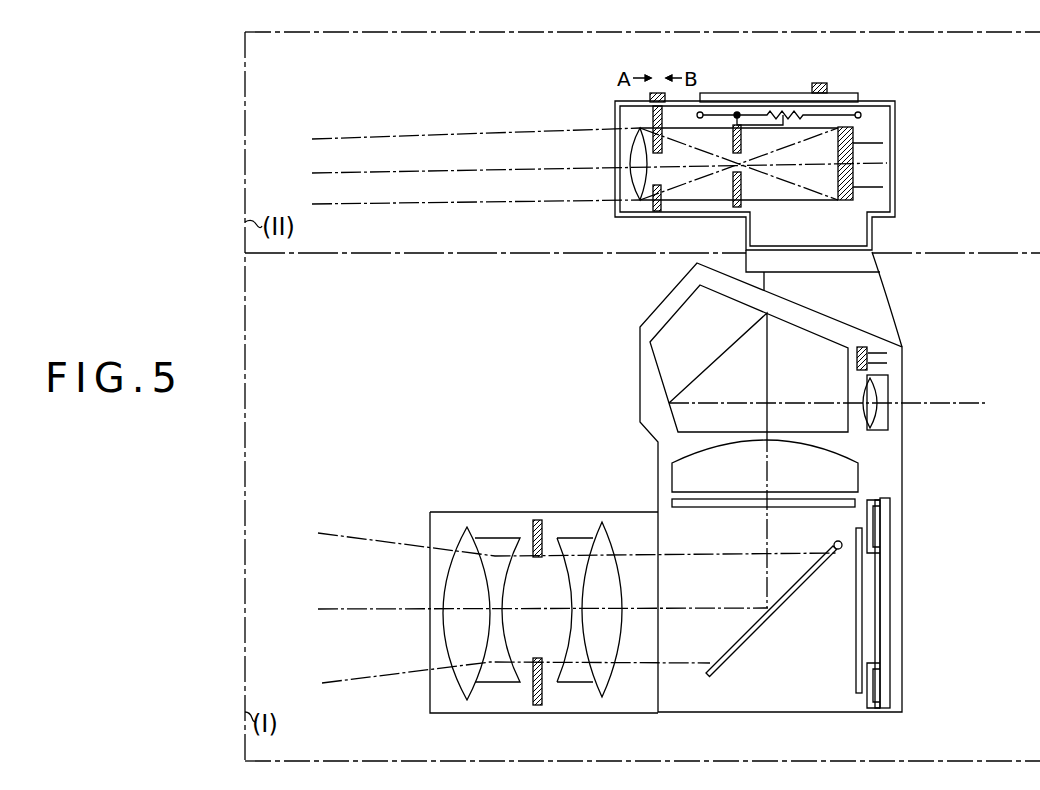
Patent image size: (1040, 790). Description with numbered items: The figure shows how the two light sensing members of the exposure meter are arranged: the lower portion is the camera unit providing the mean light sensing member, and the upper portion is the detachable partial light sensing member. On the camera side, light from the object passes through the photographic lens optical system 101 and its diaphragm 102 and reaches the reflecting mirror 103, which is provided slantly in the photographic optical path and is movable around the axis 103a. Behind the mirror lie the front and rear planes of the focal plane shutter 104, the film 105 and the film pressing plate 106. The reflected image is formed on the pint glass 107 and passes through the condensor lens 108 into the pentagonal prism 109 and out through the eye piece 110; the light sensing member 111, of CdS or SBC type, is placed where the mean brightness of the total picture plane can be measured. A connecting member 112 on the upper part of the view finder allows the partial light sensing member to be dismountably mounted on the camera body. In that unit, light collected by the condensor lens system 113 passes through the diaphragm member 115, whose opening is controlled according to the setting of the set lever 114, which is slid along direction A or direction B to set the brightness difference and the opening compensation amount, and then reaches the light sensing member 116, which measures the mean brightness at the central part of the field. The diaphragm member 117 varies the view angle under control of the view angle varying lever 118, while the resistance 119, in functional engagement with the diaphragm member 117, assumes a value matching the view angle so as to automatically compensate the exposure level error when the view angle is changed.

The photographic lens optical system 101 is at (465, 695).
The diaphragm 102 is at (540, 705).
The reflecting mirror 103 is at (733, 650).
The axis 103a is at (838, 550).
The focal plane shutter 104 is at (857, 678).
The film 105 is at (880, 593).
The film pressing plate 106 is at (890, 642).
The pint glass 107 is at (855, 503).
The condensor lens 108 is at (840, 468).
The pentagonal prism 109 is at (667, 358).
The eye piece 110 is at (880, 392).
The light sensing member 111 is at (887, 358).
The connecting member 112 is at (880, 310).
The condensor lens system 113 is at (636, 153).
The set lever 114 is at (656, 93).
The diaphragm member 115 is at (653, 118).
The light sensing member 116 is at (853, 163).
The diaphragm member 117 is at (737, 207).
The view angle varying lever 118 is at (820, 83).
The resistance 119 is at (783, 125).